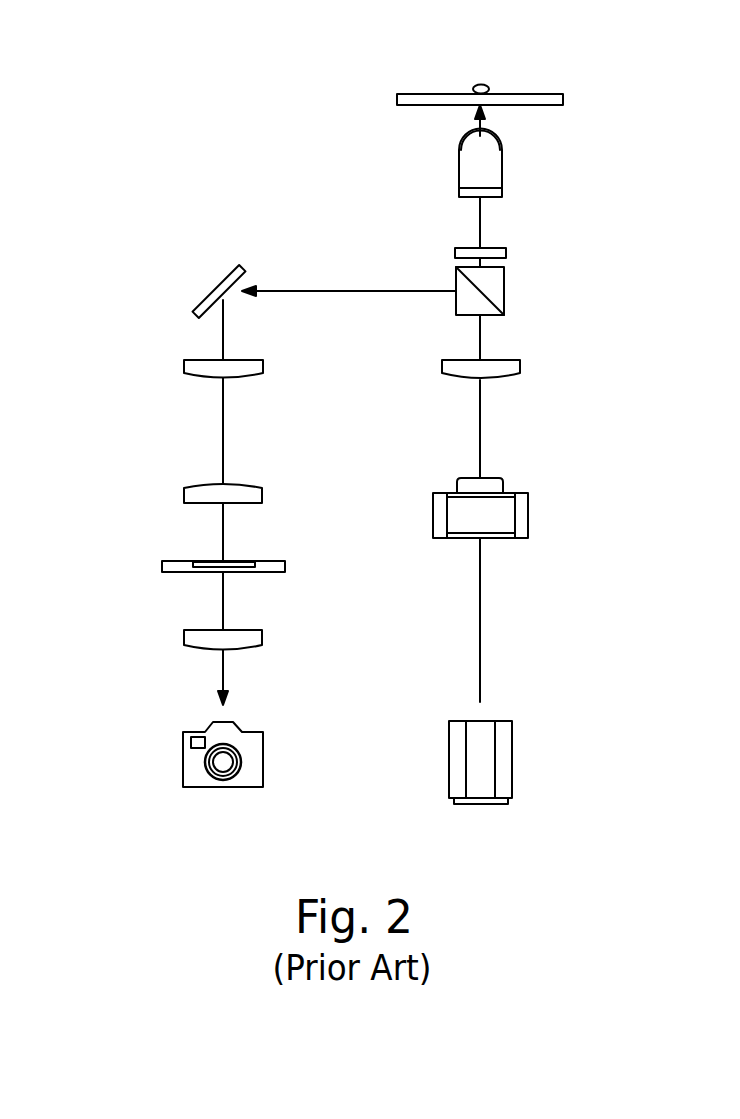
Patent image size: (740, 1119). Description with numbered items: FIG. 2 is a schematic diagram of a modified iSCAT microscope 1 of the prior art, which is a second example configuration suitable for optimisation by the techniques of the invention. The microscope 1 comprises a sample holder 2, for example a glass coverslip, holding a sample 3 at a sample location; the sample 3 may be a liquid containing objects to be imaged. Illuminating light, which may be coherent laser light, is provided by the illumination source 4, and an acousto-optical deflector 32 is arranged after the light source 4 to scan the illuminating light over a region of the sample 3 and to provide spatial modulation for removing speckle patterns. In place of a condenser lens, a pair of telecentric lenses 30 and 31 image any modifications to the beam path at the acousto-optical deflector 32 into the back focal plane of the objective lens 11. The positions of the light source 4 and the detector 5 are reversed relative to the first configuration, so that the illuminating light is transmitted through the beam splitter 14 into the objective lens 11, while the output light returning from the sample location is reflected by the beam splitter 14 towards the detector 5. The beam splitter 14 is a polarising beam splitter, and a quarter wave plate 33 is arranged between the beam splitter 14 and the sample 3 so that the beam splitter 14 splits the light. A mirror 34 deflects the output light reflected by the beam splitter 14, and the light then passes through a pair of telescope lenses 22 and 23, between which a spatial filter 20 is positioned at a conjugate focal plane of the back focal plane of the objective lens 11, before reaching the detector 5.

The microscope 1 is at (190, 176).
The sample holder 2 is at (397, 99).
The sample 3 is at (477, 84).
The illumination source 4 is at (509, 759).
The detector 5 is at (197, 788).
The objective lens 11 is at (503, 173).
The beam splitter 14 is at (455, 276).
The spatial filter 20 is at (162, 572).
The telescope lens 22 is at (263, 493).
The telescope lens 23 is at (187, 646).
The telecentric lens 30 is at (522, 368).
The telecentric lens 31 is at (263, 368).
The acousto-optical deflector 32 is at (529, 514).
The quarter wave plate 33 is at (507, 252).
The mirror 34 is at (212, 292).